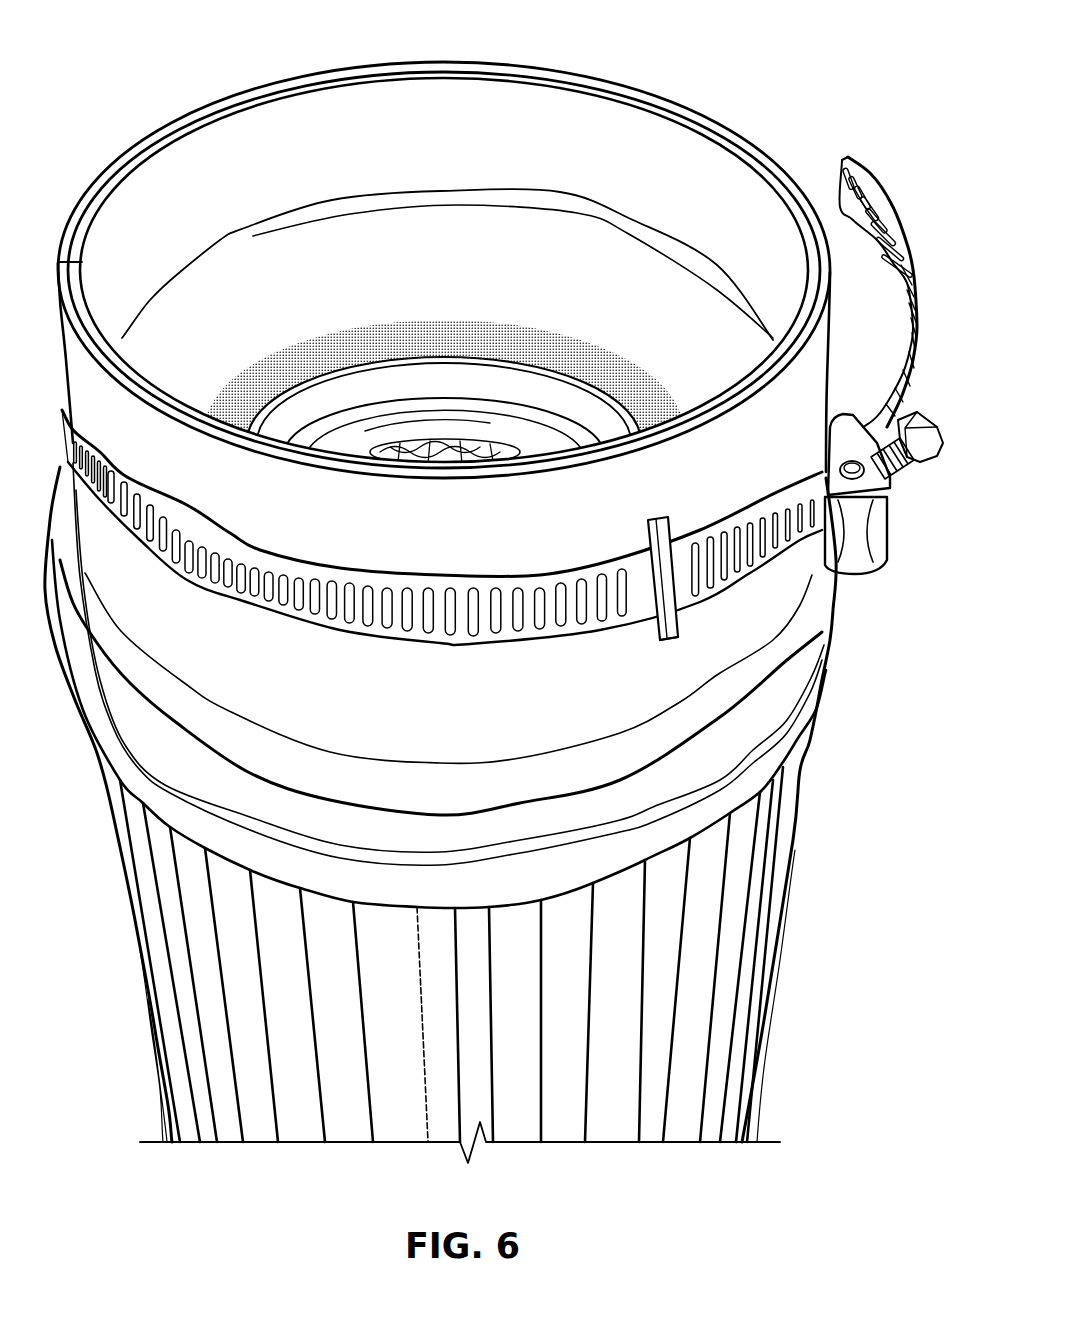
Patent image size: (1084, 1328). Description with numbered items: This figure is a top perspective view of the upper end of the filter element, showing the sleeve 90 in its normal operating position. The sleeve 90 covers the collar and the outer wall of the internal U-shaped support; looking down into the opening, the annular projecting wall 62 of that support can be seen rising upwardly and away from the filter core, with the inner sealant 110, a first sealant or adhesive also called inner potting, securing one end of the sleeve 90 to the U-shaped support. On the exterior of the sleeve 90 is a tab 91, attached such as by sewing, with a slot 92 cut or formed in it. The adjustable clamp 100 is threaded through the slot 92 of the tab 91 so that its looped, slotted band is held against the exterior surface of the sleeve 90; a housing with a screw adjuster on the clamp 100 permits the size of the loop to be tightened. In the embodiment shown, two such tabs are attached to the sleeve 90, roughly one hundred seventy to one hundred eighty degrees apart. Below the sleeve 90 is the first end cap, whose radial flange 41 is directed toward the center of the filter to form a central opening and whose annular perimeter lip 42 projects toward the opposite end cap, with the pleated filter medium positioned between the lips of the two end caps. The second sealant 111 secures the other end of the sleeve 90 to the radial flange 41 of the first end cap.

The sleeve 90 is at (487, 112).
The inner sealant 110 is at (352, 318).
The annular projecting wall 62 is at (450, 377).
The adjustable clamp 100 is at (350, 590).
The slot 92 is at (646, 544).
The tab 91 is at (657, 632).
The radial flange 41 is at (808, 658).
The annular perimeter lip 42 is at (838, 681).
The second sealant 111 is at (181, 714).